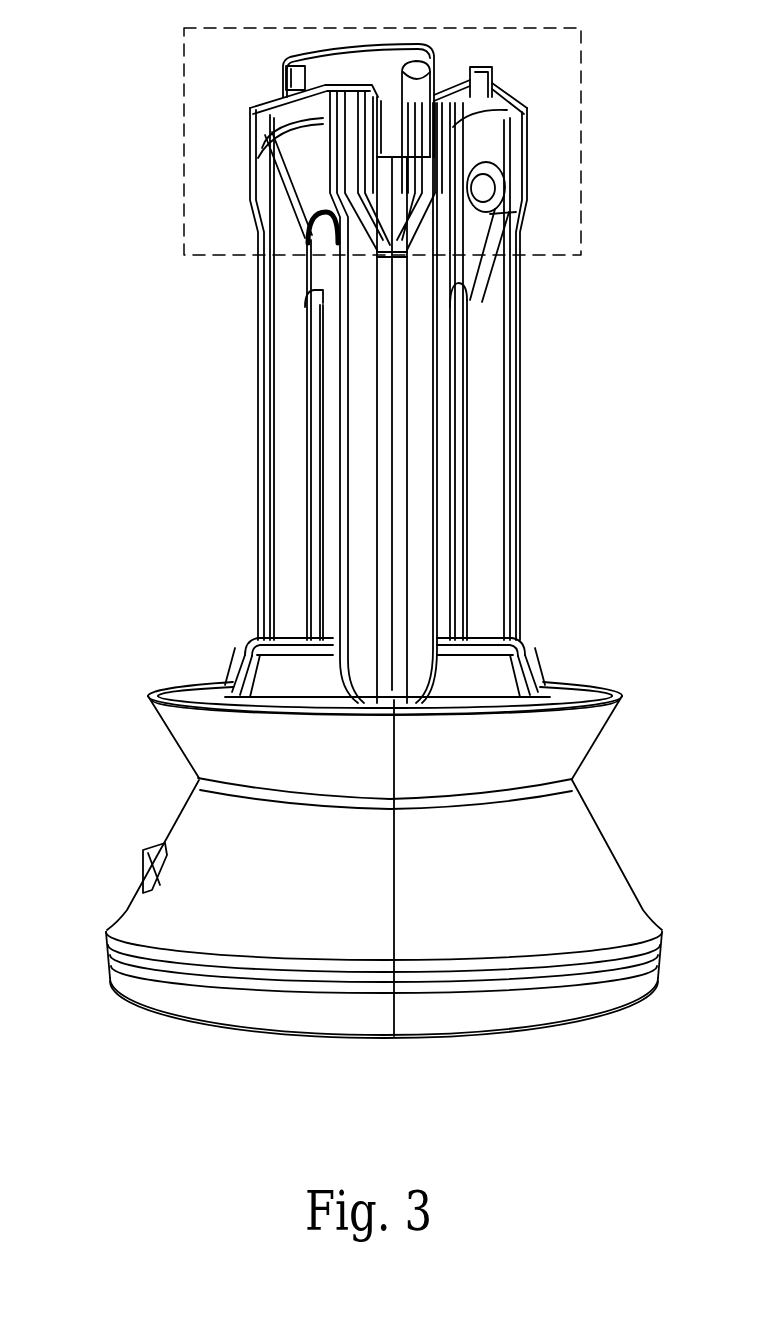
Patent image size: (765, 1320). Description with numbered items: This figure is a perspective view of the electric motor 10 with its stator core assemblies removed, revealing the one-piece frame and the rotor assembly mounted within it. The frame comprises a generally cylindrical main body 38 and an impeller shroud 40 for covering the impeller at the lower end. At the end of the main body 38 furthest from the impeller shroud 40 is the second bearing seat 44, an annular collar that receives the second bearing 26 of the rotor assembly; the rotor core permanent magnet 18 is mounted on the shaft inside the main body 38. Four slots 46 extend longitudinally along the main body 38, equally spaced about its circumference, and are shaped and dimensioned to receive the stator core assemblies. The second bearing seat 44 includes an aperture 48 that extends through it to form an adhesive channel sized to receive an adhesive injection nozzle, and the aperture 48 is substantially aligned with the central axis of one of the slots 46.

The electric motor 10 is at (130, 88).
The rotor core permanent magnet 18 is at (330, 413).
The second bearing 26 is at (320, 226).
The main body 38 is at (237, 518).
The impeller shroud 40 is at (463, 1013).
The second bearing seat 44 is at (497, 158).
The slots 46 is at (318, 467).
The aperture 48 is at (500, 203).